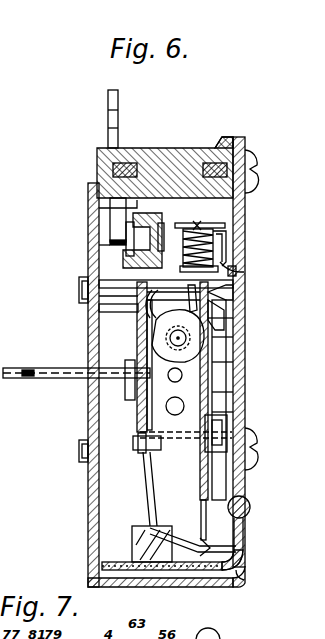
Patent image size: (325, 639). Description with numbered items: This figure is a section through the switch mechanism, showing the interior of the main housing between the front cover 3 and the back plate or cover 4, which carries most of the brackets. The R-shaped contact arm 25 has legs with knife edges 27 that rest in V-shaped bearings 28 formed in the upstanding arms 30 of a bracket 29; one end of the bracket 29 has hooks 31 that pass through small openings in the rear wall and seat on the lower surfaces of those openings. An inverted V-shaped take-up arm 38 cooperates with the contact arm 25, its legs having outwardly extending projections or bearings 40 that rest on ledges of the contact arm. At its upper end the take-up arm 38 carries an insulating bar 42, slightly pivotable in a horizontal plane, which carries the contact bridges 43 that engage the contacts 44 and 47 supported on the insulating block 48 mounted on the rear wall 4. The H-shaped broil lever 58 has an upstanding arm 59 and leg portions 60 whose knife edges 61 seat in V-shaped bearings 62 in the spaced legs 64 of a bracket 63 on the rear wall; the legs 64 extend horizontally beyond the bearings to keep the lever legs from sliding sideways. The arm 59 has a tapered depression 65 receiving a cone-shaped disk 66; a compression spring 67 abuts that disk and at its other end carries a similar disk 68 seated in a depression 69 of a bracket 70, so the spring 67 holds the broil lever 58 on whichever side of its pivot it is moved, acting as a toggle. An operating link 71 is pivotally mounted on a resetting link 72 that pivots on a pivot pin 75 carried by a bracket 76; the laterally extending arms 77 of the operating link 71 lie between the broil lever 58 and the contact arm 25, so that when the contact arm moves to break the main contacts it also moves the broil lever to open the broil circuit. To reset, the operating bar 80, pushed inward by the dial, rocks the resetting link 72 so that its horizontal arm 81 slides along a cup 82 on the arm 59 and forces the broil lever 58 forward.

The front cover 3 is at (88, 513).
The back plate or cover 4 is at (237, 346).
The contact arm 25 is at (140, 380).
The knife edge 27 is at (150, 515).
The V-shaped bearing 28 is at (160, 572).
The bracket 29 is at (200, 575).
The upstanding arm 30 is at (140, 538).
The hook 31 is at (244, 572).
The take-up arm 38 is at (147, 405).
The projection or bearing 40 is at (100, 450).
The insulating bar 42 is at (99, 208).
The contact bridge 43 is at (130, 258).
The contact 44 is at (118, 218).
The contact 47 is at (178, 474).
The insulating block 48 is at (164, 146).
The broil lever 58 is at (226, 396).
The upstanding arm 59 is at (233, 360).
The leg portion 60 is at (209, 502).
The knife edge 61 is at (205, 544).
The V-shaped bearing 62 is at (238, 545).
The bracket 63 is at (240, 520).
The leg 64 is at (192, 540).
The tapered depression 65 is at (236, 296).
The cone-shaped disk 66 is at (228, 268).
The spring 67 is at (227, 236).
The disk 68 is at (183, 243).
The depression 69 is at (197, 223).
The bracket 70 is at (244, 193).
The operating link 71 is at (140, 321).
The resetting link 72 is at (158, 333).
The pivot pin 75 is at (240, 440).
The bracket 76 is at (236, 471).
The arm 77 is at (194, 302).
The operating bar 80 is at (58, 376).
The arm 81 is at (226, 318).
The cup 82 is at (228, 333).